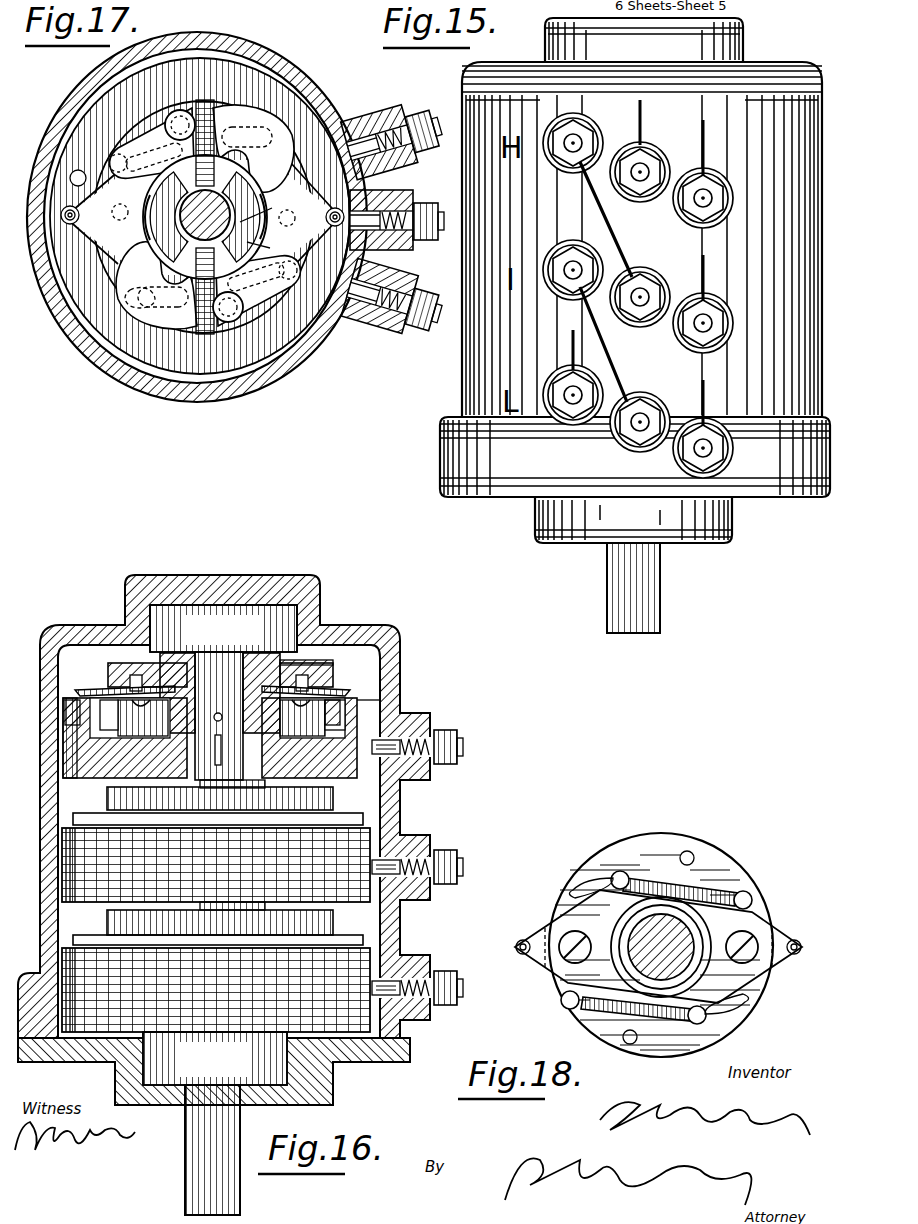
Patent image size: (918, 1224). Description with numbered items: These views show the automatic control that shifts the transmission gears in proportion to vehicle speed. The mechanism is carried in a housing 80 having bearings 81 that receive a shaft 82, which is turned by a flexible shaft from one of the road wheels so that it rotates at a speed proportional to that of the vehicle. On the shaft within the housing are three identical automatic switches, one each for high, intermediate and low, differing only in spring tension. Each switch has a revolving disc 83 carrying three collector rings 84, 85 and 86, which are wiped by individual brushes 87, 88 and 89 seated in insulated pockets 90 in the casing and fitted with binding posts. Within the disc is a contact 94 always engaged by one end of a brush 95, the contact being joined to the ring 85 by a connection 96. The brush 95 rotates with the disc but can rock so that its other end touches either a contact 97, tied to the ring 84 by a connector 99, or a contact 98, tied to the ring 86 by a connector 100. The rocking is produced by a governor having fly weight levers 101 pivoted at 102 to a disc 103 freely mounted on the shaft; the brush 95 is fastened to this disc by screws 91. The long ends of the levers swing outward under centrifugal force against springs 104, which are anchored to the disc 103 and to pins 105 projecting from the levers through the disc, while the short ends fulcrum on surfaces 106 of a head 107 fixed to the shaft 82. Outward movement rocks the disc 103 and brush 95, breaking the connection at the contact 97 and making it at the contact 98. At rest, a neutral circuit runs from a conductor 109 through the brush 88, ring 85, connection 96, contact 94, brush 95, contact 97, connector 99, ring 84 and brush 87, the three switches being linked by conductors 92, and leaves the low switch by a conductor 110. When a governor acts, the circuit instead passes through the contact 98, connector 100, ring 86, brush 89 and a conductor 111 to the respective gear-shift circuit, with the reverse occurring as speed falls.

In FIG. 17, the housing 80 is at (272, 62).
In FIG. 15, the housing 80 is at (478, 76).
In FIG. 16, the housing 80 is at (395, 640).
In FIG. 16, the bearings 81 is at (220, 845).
In FIG. 17, the shaft 82 is at (205, 217).
In FIG. 15, the shaft 82 is at (633, 588).
In FIG. 16, the shaft 82 is at (205, 1150).
In FIG. 18, the shaft 82 is at (661, 947).
In FIG. 17, the revolving disc 83 is at (238, 365).
In FIG. 16, the revolving disc 83 is at (395, 782).
In FIG. 16, the collector ring 84 is at (65, 700).
In FIG. 16, the collector ring 85 is at (65, 740).
In FIG. 16, the collector ring 86 is at (65, 770).
In FIG. 17, the brush 87 is at (328, 316).
In FIG. 15, the brush 87 is at (573, 143).
In FIG. 17, the brush 88 is at (333, 174).
In FIG. 15, the brush 88 is at (642, 170).
In FIG. 16, the brush 88 is at (466, 754).
In FIG. 17, the brush 89 is at (348, 118).
In FIG. 15, the brush 89 is at (706, 196).
In FIG. 17, the insulated pockets 90 is at (395, 205).
In FIG. 16, the insulated pockets 90 is at (405, 836).
In FIG. 18, the screws 91 is at (565, 935).
In FIG. 15, the conductors 92 is at (608, 226).
In FIG. 17, the contact 94 is at (315, 300).
In FIG. 16, the contact 94 is at (425, 714).
In FIG. 17, the brush 95 is at (72, 224).
In FIG. 16, the brush 95 is at (360, 700).
In FIG. 18, the brush 95 is at (780, 935).
In FIG. 16, the connection 96 is at (309, 738).
In FIG. 16, the contact 97 is at (115, 698).
In FIG. 17, the contact 98 is at (74, 171).
In FIG. 16, the contact 98 is at (125, 738).
In FIG. 16, the connector 99 is at (70, 700).
In FIG. 16, the connector 100 is at (195, 857).
In FIG. 17, the fly weight levers 101 is at (276, 152).
In FIG. 16, the fly weight levers 101 is at (122, 664).
In FIG. 17, the pivot 102 is at (150, 142).
In FIG. 17, the disc 103 is at (206, 114).
In FIG. 16, the disc 103 is at (335, 672).
In FIG. 18, the disc 103 is at (730, 870).
In FIG. 17, the springs 104 is at (240, 316).
In FIG. 16, the springs 104 is at (170, 722).
In FIG. 18, the springs 104 is at (645, 875).
In FIG. 17, the pins 105 is at (180, 312).
In FIG. 18, the pins 105 is at (618, 872).
In FIG. 17, the surfaces 106 is at (281, 242).
In FIG. 17, the head 107 is at (279, 204).
In FIG. 16, the head 107 is at (290, 650).
In FIG. 15, the conductor 109 is at (644, 118).
In FIG. 15, the conductor 110 is at (572, 345).
In FIG. 15, the conductor 111 is at (706, 140).